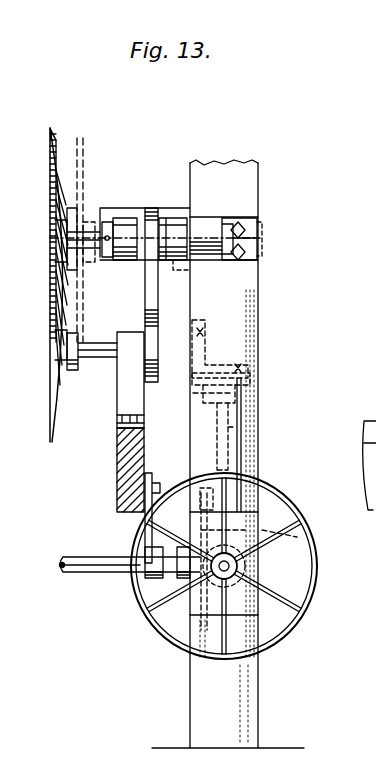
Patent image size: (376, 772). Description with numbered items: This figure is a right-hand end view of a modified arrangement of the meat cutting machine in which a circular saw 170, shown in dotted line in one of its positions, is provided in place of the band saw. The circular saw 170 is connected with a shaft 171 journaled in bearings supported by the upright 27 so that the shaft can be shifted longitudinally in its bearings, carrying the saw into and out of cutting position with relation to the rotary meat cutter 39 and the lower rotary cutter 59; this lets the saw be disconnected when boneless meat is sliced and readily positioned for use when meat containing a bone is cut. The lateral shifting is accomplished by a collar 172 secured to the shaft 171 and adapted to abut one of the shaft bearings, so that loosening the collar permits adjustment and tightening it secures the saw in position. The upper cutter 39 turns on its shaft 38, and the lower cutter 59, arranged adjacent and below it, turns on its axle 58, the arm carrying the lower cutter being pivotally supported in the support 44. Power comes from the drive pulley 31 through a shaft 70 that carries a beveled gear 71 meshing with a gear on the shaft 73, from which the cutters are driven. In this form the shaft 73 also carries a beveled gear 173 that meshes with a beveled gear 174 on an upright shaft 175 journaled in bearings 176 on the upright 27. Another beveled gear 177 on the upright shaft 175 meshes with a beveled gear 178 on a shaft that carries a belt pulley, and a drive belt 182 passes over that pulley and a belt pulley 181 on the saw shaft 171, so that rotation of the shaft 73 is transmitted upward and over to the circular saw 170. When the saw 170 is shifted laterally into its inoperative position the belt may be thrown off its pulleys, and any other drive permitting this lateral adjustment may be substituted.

The upright 27 is at (248, 176).
The drive pulley 31 is at (313, 592).
The shaft 38 is at (87, 222).
The rotary meat cutter 39 is at (50, 142).
The support 44 is at (128, 483).
The axle 58 is at (106, 358).
The rotary cutter 59 is at (55, 405).
The shaft 70 is at (238, 565).
The beveled gear 71 is at (236, 576).
The shaft 73 is at (83, 558).
The circular saw 170 is at (84, 142).
The shaft 171 is at (177, 237).
The collar 172 is at (105, 256).
The beveled gear 173 is at (298, 537).
The beveled gear 174 is at (255, 505).
The upright shaft 175 is at (238, 425).
The bearings 176 is at (250, 393).
The beveled gear 177 is at (241, 367).
The beveled gear 178 is at (199, 331).
The belt pulley 181 is at (205, 227).
The drive belt 182 is at (152, 302).